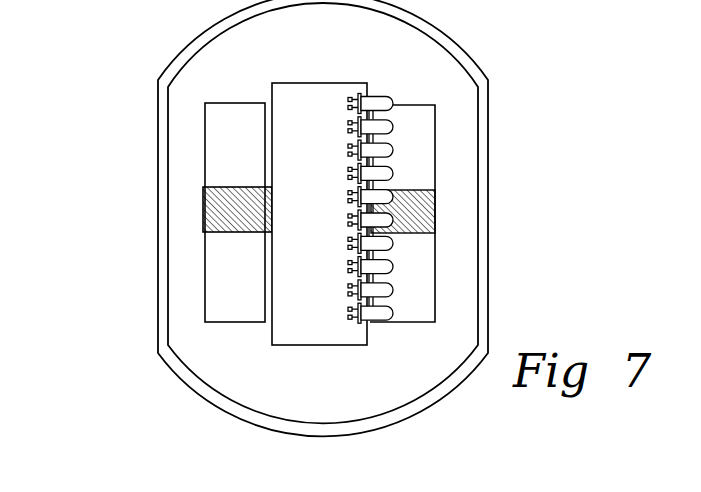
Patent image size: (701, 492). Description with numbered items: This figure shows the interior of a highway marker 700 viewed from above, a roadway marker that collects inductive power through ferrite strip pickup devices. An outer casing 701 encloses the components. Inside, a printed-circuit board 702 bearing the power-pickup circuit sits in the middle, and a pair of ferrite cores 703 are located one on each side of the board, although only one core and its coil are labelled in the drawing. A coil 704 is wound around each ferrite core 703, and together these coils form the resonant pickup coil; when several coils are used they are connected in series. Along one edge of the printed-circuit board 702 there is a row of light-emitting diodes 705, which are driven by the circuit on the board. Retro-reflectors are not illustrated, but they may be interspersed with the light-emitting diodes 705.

The highway marker 700 is at (80, 157).
The casing 701 is at (488, 123).
The printed-circuit board 702 is at (331, 61).
The ferrite core 703 is at (240, 103).
The coil 704 is at (203, 189).
The light-emitting diodes 705 is at (382, 98).